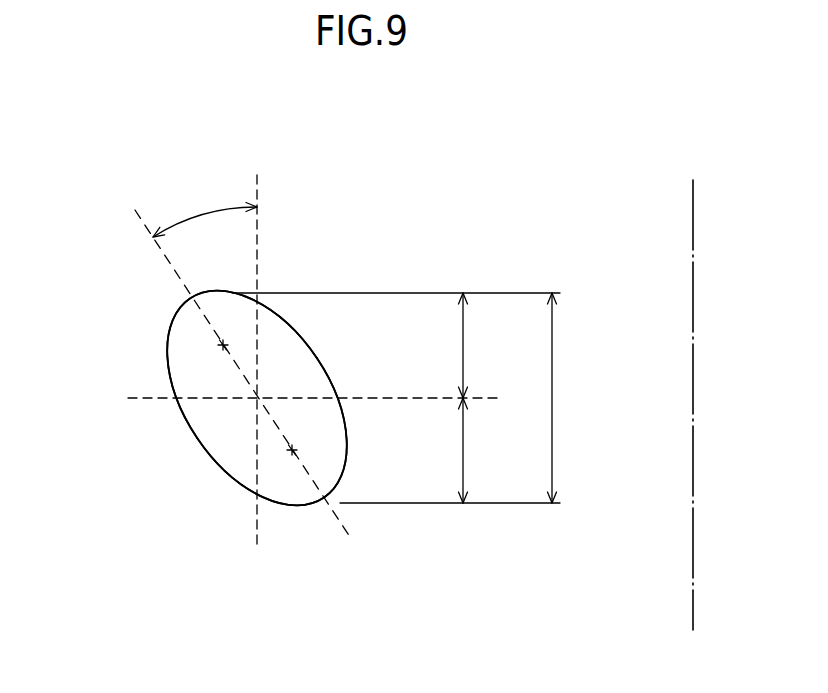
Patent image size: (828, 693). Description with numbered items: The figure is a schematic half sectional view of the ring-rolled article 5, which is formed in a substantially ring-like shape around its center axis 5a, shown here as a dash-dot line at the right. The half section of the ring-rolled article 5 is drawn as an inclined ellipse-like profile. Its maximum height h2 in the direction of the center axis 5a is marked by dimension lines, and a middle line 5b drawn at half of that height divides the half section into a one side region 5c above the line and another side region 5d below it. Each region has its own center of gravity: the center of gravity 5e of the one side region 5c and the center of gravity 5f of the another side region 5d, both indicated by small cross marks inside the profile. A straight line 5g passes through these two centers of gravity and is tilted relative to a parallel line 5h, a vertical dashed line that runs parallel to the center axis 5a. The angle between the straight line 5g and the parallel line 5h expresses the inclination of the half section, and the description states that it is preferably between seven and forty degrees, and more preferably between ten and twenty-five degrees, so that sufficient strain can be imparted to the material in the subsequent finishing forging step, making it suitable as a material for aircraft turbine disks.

The ring-rolled article 5 is at (142, 312).
The center axis 5a is at (693, 215).
The middle line 5b is at (150, 400).
The one side region 5c is at (270, 362).
The another side region 5d is at (327, 452).
The center of gravity of the one side region 5e is at (223, 345).
The center of gravity of the another side region 5f is at (292, 450).
The straight line 5g is at (162, 250).
The parallel line 5h is at (258, 230).
The maximum height h2 is at (414, 398).